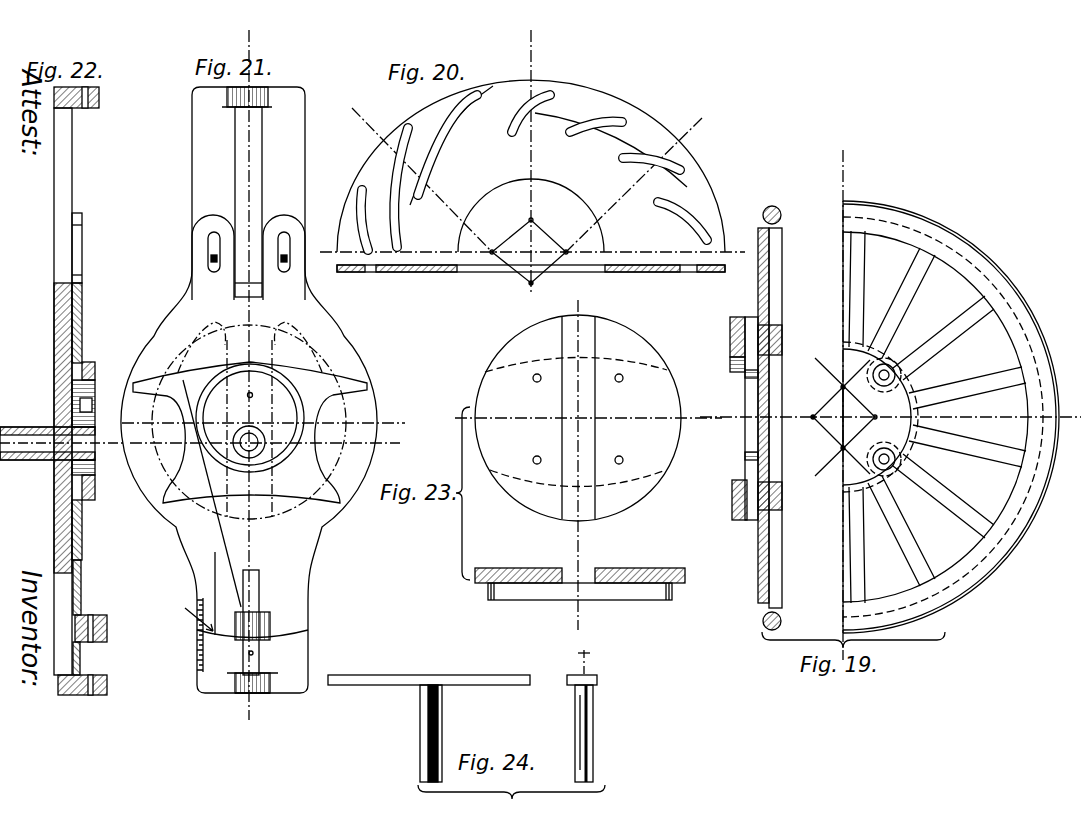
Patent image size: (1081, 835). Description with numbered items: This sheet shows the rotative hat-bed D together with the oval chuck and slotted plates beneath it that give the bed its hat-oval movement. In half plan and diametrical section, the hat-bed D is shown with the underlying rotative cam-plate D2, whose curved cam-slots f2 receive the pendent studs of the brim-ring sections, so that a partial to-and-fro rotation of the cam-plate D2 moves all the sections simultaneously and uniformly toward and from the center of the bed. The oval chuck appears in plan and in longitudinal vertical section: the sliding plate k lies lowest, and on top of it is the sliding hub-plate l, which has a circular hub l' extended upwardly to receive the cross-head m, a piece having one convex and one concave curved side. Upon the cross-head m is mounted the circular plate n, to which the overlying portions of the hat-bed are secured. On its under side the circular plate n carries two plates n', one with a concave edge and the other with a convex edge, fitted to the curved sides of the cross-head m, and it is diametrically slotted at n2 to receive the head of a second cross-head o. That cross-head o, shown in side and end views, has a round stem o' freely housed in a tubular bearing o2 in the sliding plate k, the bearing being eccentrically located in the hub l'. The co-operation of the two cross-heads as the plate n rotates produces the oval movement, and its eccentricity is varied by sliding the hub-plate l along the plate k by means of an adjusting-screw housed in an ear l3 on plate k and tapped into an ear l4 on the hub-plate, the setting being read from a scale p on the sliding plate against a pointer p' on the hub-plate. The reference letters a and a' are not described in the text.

In FIG. 22, the sliding plate k is at (67, 381).
In FIG. 21, the sliding plate k is at (249, 390).
In FIG. 22, the sliding hub-plate l is at (81, 444).
In FIG. 21, the sliding hub-plate l is at (250, 426).
In FIG. 22, the circular hub l' is at (89, 427).
In FIG. 21, the circular hub l' is at (299, 418).
In FIG. 22, the ear l3 is at (82, 696).
In FIG. 21, the ear l3 is at (247, 706).
In FIG. 22, the ear l4 is at (91, 617).
In FIG. 21, the ear l4 is at (260, 620).
In FIG. 22, the cross-head m is at (94, 422).
In FIG. 21, the cross-head m is at (178, 372).
In FIG. 22, the tubular bearing o2 is at (62, 451).
In FIG. 21, the tubular bearing o2 is at (262, 430).
In FIG. 21, the scale p is at (189, 635).
In FIG. 21, the pointer p' is at (192, 611).
In FIG. 19, the rotative hat-bed D is at (795, 215).
In FIG. 20, the rotative cam-plate D2 is at (531, 185).
In FIG. 19, the rotative cam-plate D2 is at (760, 532).
In FIG. 20, the curved cam-slots f2 is at (470, 112).
In FIG. 23, the circular plate n is at (580, 471).
In FIG. 19, the circular plate n is at (738, 409).
In FIG. 23, the plates n' is at (580, 464).
In FIG. 19, the plates n' is at (725, 418).
In FIG. 23, the diametrical slot n2 is at (578, 470).
In FIG. 19, the diametrical slot n2 is at (750, 366).
In FIG. 19, the wheel rim a is at (951, 417).
In FIG. 19, the spokes a' is at (934, 417).
In FIG. 24, the second cross-head o is at (462, 669).
In FIG. 24, the round spindle or stem o' is at (516, 733).